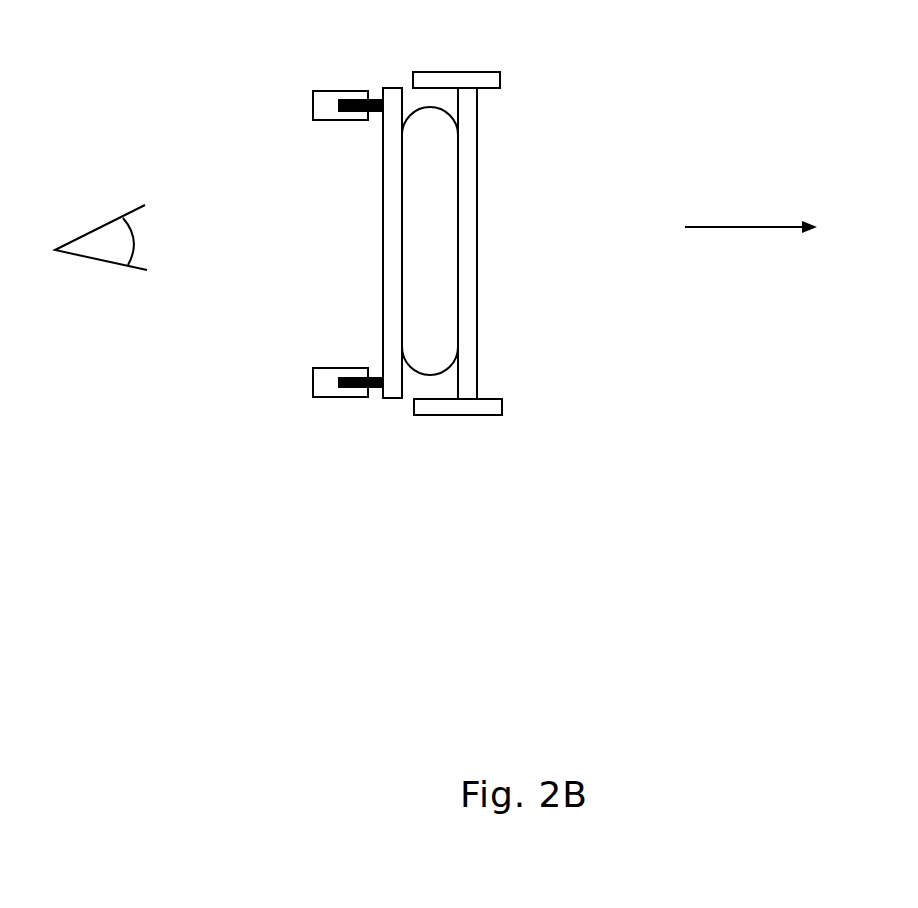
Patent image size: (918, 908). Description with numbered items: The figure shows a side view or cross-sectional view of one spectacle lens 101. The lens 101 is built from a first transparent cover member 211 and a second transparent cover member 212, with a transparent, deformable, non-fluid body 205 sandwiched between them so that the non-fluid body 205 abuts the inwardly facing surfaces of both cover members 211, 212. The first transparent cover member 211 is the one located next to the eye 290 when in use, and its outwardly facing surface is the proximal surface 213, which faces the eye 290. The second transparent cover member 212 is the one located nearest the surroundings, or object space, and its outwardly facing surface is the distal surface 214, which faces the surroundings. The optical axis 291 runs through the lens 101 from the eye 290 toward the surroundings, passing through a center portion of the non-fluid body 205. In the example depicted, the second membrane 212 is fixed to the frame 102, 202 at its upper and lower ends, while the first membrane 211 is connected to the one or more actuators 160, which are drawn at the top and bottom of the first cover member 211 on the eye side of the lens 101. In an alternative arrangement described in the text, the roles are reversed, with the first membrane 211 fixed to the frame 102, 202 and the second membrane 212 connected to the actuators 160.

The spectacle lens 101 is at (364, 57).
The frame 102 is at (536, 232).
The frame 202 is at (493, 80).
The actuators 160 is at (316, 98).
The non-fluid body 205 is at (423, 275).
The first transparent cover member 211 is at (340, 243).
The proximal surface 213 is at (393, 193).
The second transparent cover member 212 is at (522, 243).
The distal surface 214 is at (465, 210).
The eye 290 is at (88, 222).
The optical axis 291 is at (751, 212).